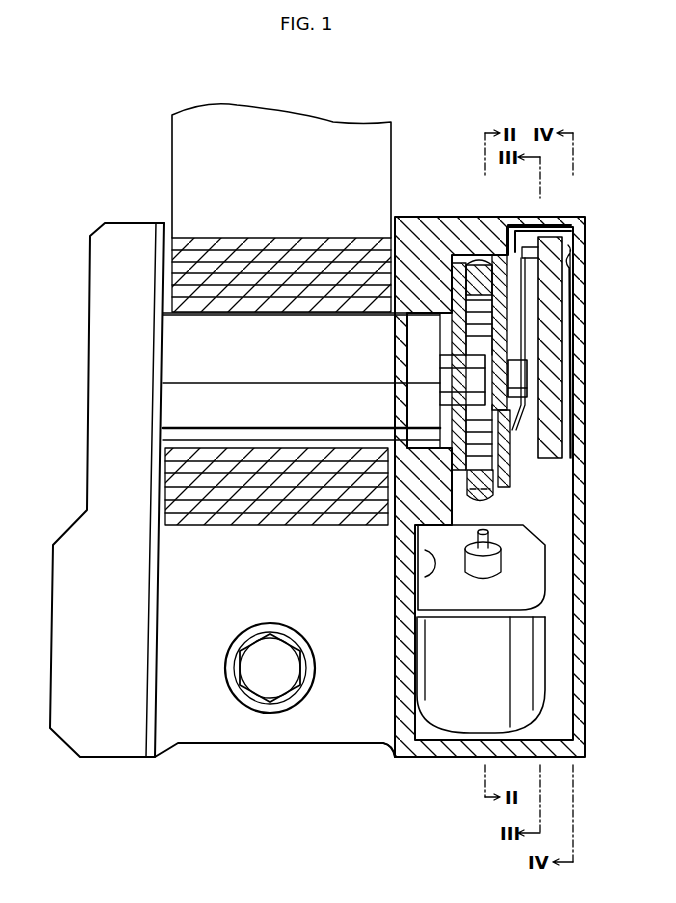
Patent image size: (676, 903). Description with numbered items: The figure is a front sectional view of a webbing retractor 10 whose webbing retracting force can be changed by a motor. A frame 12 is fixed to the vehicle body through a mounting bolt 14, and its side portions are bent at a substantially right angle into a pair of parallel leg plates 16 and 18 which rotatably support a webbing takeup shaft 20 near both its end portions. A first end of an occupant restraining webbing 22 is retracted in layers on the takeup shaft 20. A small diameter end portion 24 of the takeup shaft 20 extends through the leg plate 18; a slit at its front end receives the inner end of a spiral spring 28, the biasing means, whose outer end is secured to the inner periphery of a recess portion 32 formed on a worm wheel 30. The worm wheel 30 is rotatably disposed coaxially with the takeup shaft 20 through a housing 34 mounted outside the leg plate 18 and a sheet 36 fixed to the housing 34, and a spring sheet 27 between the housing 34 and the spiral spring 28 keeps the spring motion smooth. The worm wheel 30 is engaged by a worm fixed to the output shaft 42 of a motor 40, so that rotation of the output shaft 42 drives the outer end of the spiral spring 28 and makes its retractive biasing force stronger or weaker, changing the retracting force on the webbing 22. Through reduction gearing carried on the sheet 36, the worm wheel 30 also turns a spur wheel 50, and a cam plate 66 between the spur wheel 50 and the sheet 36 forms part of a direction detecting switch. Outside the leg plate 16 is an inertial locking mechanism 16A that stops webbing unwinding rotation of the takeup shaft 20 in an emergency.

The webbing retractor 10 is at (464, 96).
The frame 12 is at (208, 745).
The mounting bolt 14 is at (290, 683).
The leg plate 16 is at (158, 684).
The inertial locking mechanism 16A is at (130, 228).
The leg plate 18 is at (388, 745).
The webbing takeup shaft 20 is at (299, 322).
The occupant restraining webbing 22 is at (391, 168).
The small diameter end portion 24 is at (443, 372).
The spring sheet 27 is at (457, 345).
The spiral spring 28 is at (462, 323).
The worm wheel 30 is at (488, 258).
The recess portion 32 is at (492, 466).
The housing 34 is at (462, 235).
The sheet 36 is at (520, 238).
The motor 40 is at (538, 683).
The output shaft 42 is at (486, 543).
The spur wheel 50 is at (560, 428).
The cam plate 66 is at (567, 292).